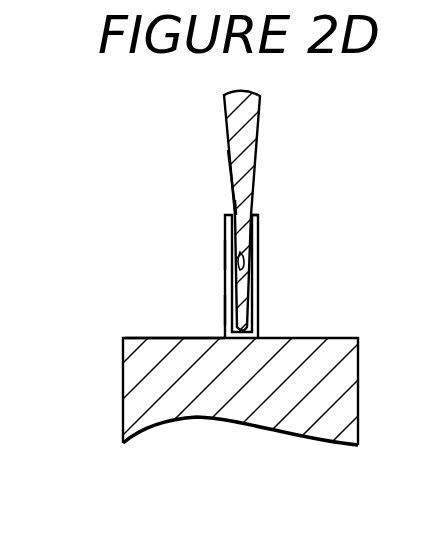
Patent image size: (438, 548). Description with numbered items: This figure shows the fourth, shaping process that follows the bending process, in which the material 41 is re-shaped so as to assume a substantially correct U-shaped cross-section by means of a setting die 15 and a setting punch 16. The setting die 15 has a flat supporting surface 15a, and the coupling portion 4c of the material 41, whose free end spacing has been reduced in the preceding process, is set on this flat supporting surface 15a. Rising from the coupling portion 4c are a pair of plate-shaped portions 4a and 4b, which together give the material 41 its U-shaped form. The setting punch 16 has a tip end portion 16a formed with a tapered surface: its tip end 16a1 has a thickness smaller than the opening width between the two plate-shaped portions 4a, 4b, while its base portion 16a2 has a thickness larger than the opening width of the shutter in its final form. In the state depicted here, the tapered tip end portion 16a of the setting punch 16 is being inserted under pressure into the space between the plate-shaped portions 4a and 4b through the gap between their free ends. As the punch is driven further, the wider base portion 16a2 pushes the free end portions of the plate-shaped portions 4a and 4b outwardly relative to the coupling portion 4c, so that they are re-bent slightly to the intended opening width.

The setting die 15 is at (137, 378).
The flat supporting surface 15a is at (167, 338).
The setting punch 16 is at (248, 123).
The tip end portion 16a is at (245, 182).
The tip end 16a1 is at (255, 280).
The base portion 16a2 is at (228, 199).
The plate-shaped portion 4a is at (255, 310).
The material 41 is at (257, 230).
The plate-shaped portion 4b is at (226, 258).
The coupling portion 4c is at (227, 307).